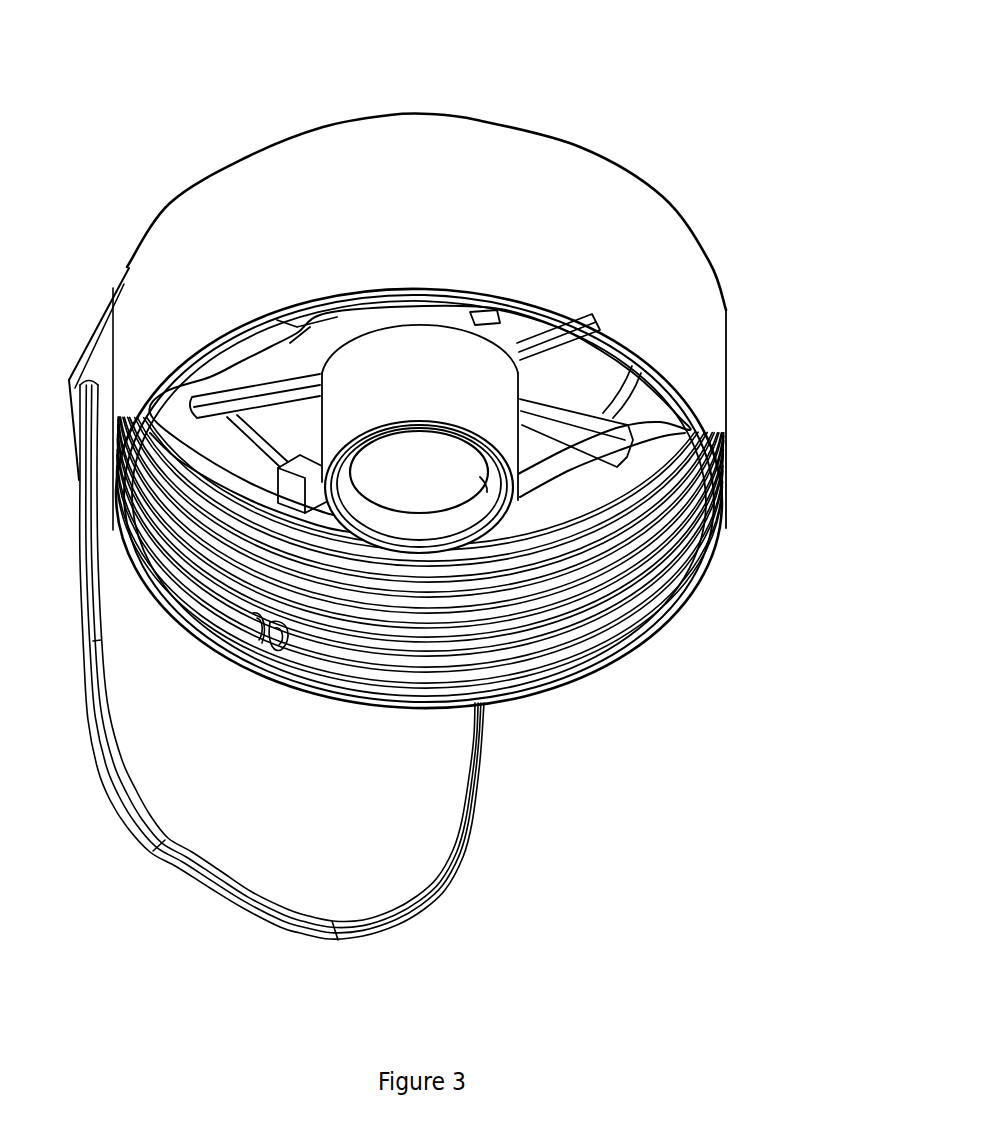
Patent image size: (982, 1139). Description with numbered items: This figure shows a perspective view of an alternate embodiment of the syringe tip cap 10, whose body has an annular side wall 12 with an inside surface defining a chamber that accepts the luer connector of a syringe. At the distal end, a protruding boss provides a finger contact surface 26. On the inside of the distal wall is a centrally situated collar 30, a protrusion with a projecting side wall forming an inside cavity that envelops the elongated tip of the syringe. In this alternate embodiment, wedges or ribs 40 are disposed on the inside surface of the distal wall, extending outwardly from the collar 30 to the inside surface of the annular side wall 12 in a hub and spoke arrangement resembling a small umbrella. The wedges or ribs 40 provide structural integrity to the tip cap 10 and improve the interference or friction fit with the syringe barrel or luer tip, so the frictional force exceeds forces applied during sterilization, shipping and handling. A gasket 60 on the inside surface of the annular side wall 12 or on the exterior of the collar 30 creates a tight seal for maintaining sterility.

The syringe tip cap 10 is at (184, 104).
The annular side wall 12 is at (728, 360).
The finger contact surface 26 is at (163, 863).
The collar 30 is at (400, 368).
The wedges or ribs 40 is at (562, 410).
The gasket 60 is at (283, 647).